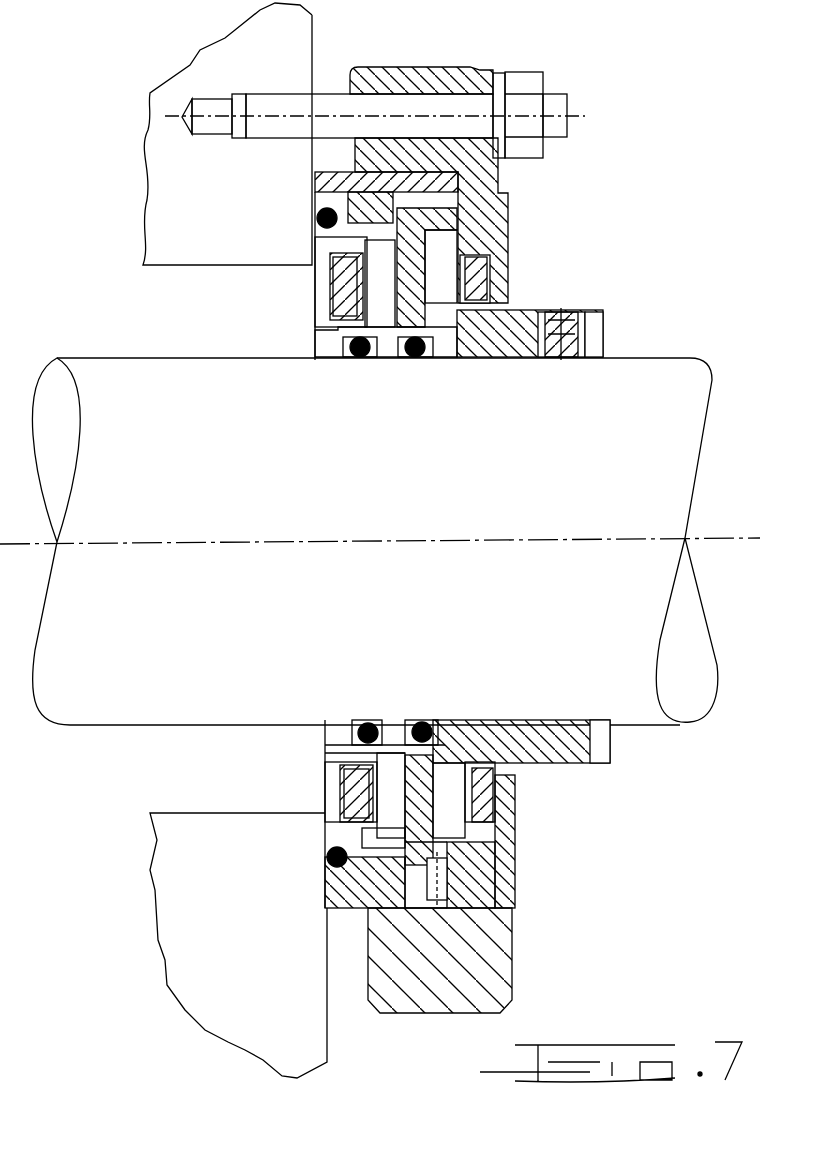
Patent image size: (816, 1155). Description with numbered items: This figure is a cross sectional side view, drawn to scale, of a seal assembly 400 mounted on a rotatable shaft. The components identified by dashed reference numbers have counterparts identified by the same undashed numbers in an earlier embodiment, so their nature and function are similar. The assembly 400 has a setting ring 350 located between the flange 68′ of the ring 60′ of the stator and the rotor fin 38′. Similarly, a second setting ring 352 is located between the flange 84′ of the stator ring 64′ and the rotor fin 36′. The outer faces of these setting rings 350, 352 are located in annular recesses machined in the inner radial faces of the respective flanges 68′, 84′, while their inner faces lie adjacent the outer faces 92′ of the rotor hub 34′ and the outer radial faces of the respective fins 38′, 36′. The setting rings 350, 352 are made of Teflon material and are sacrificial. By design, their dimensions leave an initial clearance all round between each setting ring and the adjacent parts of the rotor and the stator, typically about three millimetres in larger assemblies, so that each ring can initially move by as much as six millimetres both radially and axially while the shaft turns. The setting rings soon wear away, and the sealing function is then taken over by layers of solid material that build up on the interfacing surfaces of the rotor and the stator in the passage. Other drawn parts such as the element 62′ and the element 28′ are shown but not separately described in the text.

The seal assembly 400 is at (592, 189).
The second setting ring 352 is at (505, 258).
The ring of the stator 60′ is at (345, 208).
The setting ring 350 is at (320, 293).
The outer face of the rotor hub 92′ is at (310, 325).
The rotor fin 36′ is at (442, 300).
The rotor fin 38′ is at (387, 775).
The mating ring 62′ is at (432, 777).
The shaft sleeve 28′ is at (548, 745).
The rotor hub 34′ is at (605, 740).
The flange 68′ is at (330, 775).
The flange 84′ is at (515, 805).
The stator ring 64′ is at (515, 852).